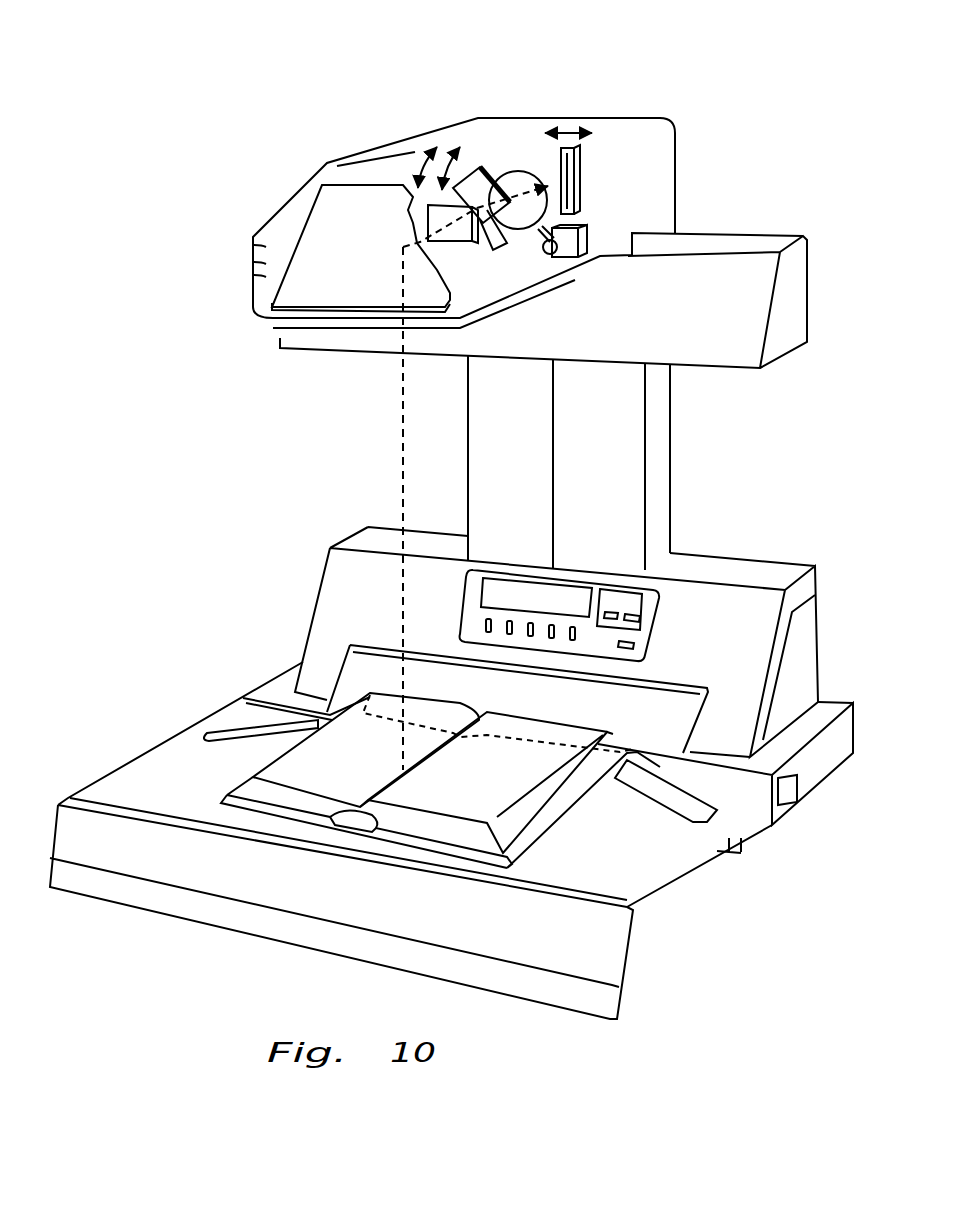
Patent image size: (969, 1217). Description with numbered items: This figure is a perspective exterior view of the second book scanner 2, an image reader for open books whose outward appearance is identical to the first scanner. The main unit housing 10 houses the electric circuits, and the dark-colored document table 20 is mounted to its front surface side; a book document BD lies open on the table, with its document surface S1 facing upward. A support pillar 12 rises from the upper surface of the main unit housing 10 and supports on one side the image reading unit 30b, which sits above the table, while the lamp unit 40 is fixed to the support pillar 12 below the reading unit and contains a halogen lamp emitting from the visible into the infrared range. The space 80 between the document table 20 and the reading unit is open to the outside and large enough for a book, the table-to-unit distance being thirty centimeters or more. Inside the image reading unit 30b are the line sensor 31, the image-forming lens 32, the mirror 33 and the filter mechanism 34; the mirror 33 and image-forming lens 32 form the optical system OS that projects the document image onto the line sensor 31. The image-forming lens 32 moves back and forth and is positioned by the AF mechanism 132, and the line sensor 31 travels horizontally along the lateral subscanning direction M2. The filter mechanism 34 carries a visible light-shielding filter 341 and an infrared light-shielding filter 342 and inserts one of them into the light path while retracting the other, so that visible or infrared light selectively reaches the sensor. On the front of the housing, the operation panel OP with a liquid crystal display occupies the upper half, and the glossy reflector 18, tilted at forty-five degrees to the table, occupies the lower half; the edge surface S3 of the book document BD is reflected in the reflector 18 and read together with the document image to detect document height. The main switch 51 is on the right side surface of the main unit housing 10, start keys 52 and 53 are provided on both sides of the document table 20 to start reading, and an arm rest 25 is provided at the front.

The second book scanner 2 is at (252, 90).
The image reading unit 30b is at (293, 200).
The optical system OS is at (387, 172).
The mirror 33 is at (367, 259).
The filter mechanism 34 is at (477, 155).
The image-forming lens 32 is at (513, 175).
The lateral direction (subscanning direction) M2 is at (566, 132).
The line sensor 31 is at (579, 183).
The AF mechanism (lens drive unit) 132 is at (590, 232).
The infrared light-shielding filter 342 is at (512, 215).
The visible light-shielding filter 341 is at (454, 243).
The lamp unit 40 is at (802, 300).
The support pillar 12 is at (668, 468).
The space 80 is at (340, 470).
The main unit housing 10 is at (804, 660).
The operation panel OP is at (655, 634).
The reflector 18 is at (340, 677).
The start key 52 is at (210, 734).
The edge surface S3 is at (552, 734).
The document surface S1 is at (492, 788).
The book document BD is at (270, 772).
The document table 20 is at (630, 858).
The main switch 51 is at (787, 788).
The start key 53 is at (712, 816).
The arm rest 25 is at (310, 907).